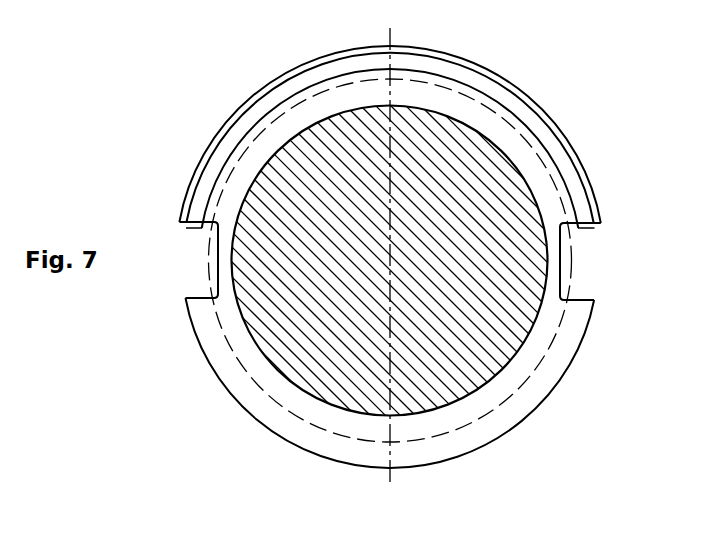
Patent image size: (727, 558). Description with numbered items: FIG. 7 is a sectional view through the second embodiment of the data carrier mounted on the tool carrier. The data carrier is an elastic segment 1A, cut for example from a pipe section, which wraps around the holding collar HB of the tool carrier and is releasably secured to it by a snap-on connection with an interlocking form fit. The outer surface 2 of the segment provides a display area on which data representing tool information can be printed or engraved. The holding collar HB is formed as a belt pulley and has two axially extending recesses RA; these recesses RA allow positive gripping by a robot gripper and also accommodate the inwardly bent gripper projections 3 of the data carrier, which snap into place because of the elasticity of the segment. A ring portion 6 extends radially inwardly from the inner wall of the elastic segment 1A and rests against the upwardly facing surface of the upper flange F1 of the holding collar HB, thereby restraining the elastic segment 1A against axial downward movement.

The elastic segment 1A is at (396, 120).
The outer surface 2 is at (495, 68).
The ring portion 6 is at (555, 148).
The gripper projections 3 is at (198, 237).
The recesses RA is at (197, 283).
The holding collar HB is at (474, 468).
The upper flange F1 is at (570, 351).